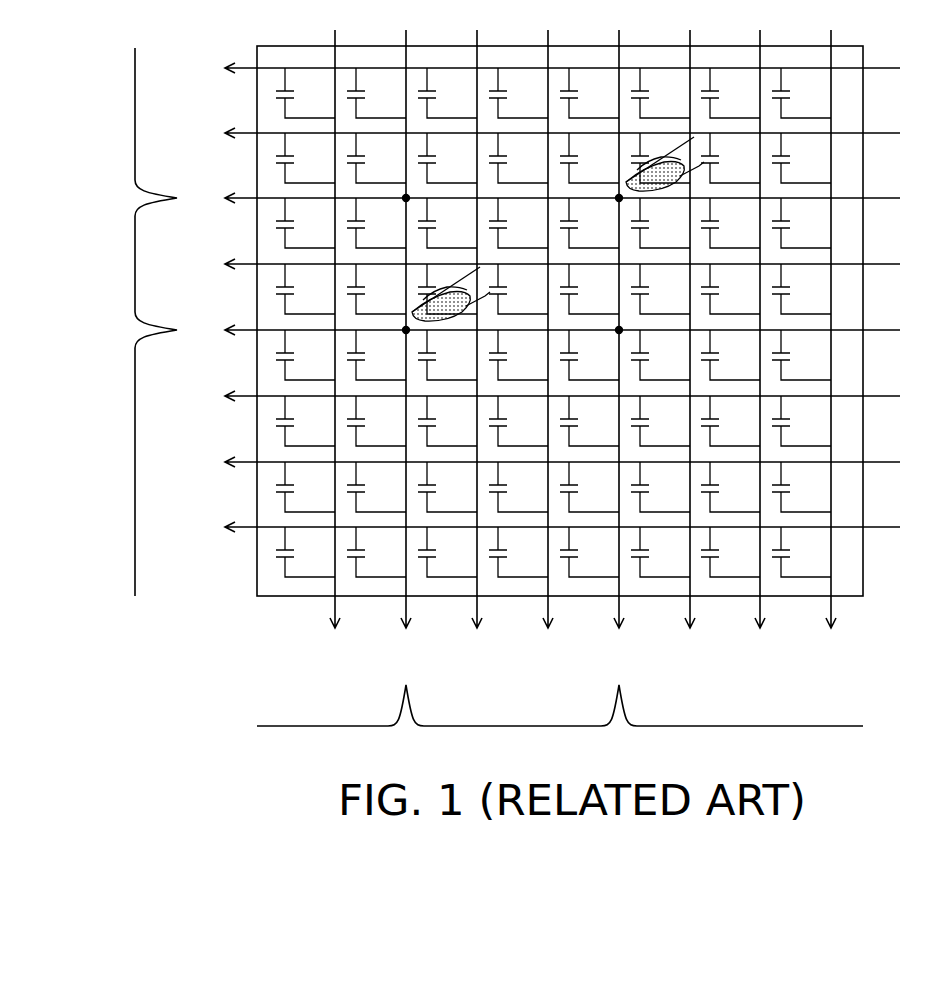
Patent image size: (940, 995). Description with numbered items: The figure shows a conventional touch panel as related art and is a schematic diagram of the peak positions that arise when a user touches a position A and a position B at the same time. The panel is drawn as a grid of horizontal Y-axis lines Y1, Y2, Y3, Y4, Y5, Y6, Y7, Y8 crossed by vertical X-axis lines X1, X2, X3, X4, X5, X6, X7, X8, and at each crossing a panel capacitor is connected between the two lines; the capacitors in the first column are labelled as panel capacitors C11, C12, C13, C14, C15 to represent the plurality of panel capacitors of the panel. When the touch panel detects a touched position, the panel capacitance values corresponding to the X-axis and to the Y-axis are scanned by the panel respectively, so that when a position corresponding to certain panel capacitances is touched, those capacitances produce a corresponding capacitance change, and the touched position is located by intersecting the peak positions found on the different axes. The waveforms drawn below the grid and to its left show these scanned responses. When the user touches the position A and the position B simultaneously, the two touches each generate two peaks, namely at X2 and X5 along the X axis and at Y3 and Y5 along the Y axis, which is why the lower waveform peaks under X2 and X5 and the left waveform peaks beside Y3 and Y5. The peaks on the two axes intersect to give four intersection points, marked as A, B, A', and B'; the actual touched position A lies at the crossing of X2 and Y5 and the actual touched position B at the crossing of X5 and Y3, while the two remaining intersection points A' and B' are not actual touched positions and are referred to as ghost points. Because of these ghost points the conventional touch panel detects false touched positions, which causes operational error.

The panel capacitor C11 is at (305, 93).
The panel capacitor C12 is at (305, 158).
The panel capacitor C13 is at (305, 223).
The panel capacitor C14 is at (305, 289).
The panel capacitor C15 is at (305, 355).
The X-axis line X1 is at (335, 343).
The X-axis peak position X2 is at (406, 343).
The X-axis line X3 is at (477, 343).
The X-axis line X4 is at (548, 343).
The X-axis peak position X5 is at (619, 343).
The X-axis line X6 is at (690, 343).
The X-axis line X7 is at (760, 343).
The X-axis line X8 is at (831, 343).
The Y-axis line Y1 is at (549, 69).
The Y-axis line Y2 is at (549, 134).
The Y-axis peak position Y3 is at (549, 199).
The Y-axis line Y4 is at (549, 265).
The Y-axis peak position Y5 is at (549, 331).
The Y-axis line Y6 is at (549, 397).
The Y-axis line Y7 is at (549, 463).
The Y-axis line Y8 is at (549, 528).
The touched position A is at (412, 340).
The ghost point A' is at (414, 190).
The touched position B is at (624, 211).
The ghost point B' is at (626, 318).